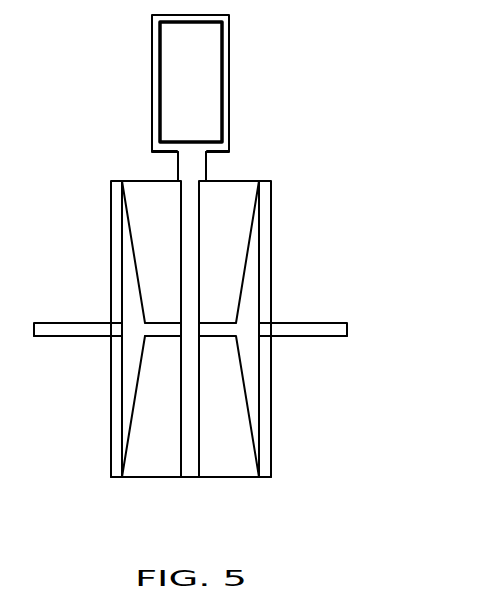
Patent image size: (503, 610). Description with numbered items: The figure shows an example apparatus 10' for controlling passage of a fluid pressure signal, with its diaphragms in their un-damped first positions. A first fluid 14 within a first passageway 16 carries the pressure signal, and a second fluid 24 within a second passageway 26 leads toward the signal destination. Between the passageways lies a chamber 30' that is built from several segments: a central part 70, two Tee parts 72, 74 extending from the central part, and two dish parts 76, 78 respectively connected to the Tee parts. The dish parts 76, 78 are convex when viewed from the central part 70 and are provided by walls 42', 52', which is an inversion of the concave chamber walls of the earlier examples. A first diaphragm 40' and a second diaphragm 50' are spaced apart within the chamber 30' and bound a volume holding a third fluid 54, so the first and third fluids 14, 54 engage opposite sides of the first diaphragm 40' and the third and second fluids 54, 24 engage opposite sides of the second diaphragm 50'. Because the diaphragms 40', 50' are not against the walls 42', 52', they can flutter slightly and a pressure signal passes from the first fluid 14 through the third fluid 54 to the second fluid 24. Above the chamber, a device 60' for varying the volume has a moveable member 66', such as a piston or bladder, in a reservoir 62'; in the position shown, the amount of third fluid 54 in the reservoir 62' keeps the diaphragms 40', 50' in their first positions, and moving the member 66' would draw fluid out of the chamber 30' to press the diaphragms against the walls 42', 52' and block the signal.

The apparatus 10' is at (191, 270).
The device for varying the volume 60' is at (222, 83).
The moveable member 66' is at (226, 82).
The reservoir 62' is at (223, 134).
The chamber 30' is at (211, 206).
The first diaphragm 40' is at (115, 329).
The dish part 76 is at (133, 262).
The wall 42' is at (121, 252).
The wall 52' is at (259, 329).
The dish part 78 is at (250, 308).
The second diaphragm 50' is at (289, 400).
The first passageway 16 is at (56, 322).
The first fluid 14 is at (63, 337).
The Tee part 72 is at (167, 328).
The second passageway 26 is at (325, 323).
The second fluid 24 is at (335, 337).
The Tee part 74 is at (203, 338).
The third fluid 54 is at (192, 420).
The central part 70 is at (188, 462).